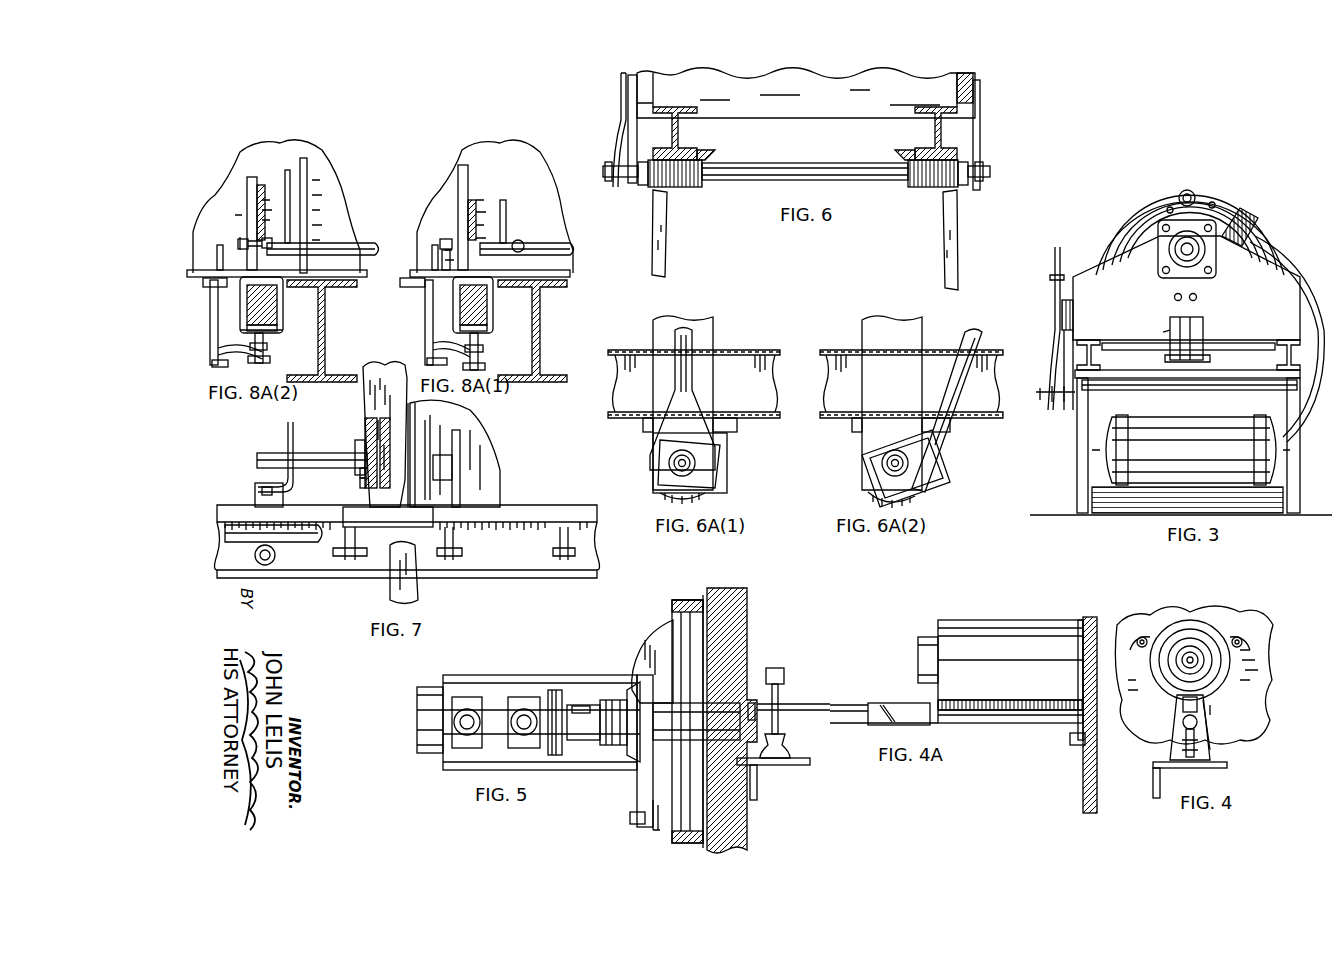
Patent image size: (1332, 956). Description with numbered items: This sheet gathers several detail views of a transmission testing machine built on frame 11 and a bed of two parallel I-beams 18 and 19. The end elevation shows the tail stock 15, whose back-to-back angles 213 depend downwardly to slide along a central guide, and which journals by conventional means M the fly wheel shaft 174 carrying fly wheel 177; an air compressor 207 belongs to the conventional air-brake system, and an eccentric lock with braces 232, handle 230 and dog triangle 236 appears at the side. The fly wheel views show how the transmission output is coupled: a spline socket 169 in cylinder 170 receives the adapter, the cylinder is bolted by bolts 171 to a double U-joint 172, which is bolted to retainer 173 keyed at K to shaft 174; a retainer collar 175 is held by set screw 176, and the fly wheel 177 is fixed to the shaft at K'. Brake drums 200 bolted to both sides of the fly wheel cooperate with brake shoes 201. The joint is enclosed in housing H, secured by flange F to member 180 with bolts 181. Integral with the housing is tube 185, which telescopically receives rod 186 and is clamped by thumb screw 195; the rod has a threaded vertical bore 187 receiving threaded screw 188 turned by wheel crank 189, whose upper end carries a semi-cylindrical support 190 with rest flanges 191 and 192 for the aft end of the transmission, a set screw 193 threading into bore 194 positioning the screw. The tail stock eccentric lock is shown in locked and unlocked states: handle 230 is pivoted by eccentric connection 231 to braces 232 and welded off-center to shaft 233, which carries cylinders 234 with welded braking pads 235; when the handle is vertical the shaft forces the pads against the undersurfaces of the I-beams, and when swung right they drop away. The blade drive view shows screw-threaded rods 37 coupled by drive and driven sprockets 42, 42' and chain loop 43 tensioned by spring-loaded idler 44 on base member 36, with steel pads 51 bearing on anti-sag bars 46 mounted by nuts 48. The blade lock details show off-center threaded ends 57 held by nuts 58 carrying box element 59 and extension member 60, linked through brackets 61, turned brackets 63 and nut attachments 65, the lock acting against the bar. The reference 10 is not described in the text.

In FIG. 3, the base 10 is at (1082, 456).
In FIG. 3, the frame 11 is at (1077, 430).
In FIG. 3, the tail stock 15 is at (1148, 343).
In FIG. 6, the I-beam 18 is at (679, 131).
In FIG. 6A1, the I-beam 18 is at (775, 350).
In FIG. 6A-2, the I-beam 18 is at (985, 350).
In FIG. 6, the I-beam 19 is at (932, 128).
In FIG. 3, the I-beam 19 is at (1287, 357).
In FIG. 7, the base member 36 is at (395, 380).
In FIG. 7, the screw-threaded rod 37 is at (300, 453).
In FIG. 7, the drive sprocket 42 is at (343, 477).
In FIG. 7, the driven sprocket 42' is at (350, 454).
In FIG. 7, the connecting chain loop 43 is at (364, 484).
In FIG. 7, the spring-loaded idler 44 is at (366, 425).
In FIG. 7, the anti-sag bar 46 is at (520, 512).
In FIG. 3, the bar mounting nut 48 is at (1091, 354).
In FIG. 7, the steel pad 51 is at (508, 490).
The off-center threaded end 57 is at (238, 244).
The nut 58 is at (248, 243).
The open box element 59 is at (283, 328).
The extension member 60 is at (243, 231).
The bracket 61 is at (218, 258).
The turned bracket 63 is at (230, 360).
The nut attachment 65 is at (252, 344).
In FIG. 5, the spline socket 169 is at (418, 722).
In FIG. 4, the spline socket 169 is at (1200, 655).
In FIG. 5, the cylinder 170 is at (430, 680).
In FIG. 4, the cylinder 170 is at (1200, 628).
In FIG. 5, the bolt 171 is at (458, 690).
In FIG. 5, the double U-joint 172 is at (500, 690).
In FIG. 5, the retainer 173 is at (552, 690).
In FIG. 5, the fly wheel shaft 174 is at (572, 705).
In FIG. 5, the retainer collar 175 is at (612, 700).
In FIG. 5, the set screw 176 is at (616, 740).
In FIG. 3, the fly wheel 177 is at (1266, 200).
In FIG. 5, the fly wheel 177 is at (735, 625).
In FIG. 5, the member 180 is at (657, 830).
In FIG. 5, the bolt 181 is at (630, 818).
In FIG. 4A, the tube 185 is at (995, 725).
In FIG. 4A, the rod 186 is at (836, 700).
In FIG. 5, the vertical bore 187 is at (790, 704).
In FIG. 5, the threaded screw 188 is at (778, 725).
In FIG. 5, the wheel crank 189 is at (795, 765).
In FIG. 5, the semi-cylindrical support 190 is at (784, 670).
In FIG. 4, the semi-cylindrical support 190 is at (1178, 685).
In FIG. 4, the rest flange 191 is at (1182, 700).
In FIG. 4, the rest flange 192 is at (1230, 675).
In FIG. 5, the set screw 193 is at (765, 725).
In FIG. 5, the bore 194 is at (752, 703).
In FIG. 4A, the thumb screw 195 is at (870, 725).
In FIG. 5, the brake drum 200 is at (688, 600).
In FIG. 5, the brake shoe 201 is at (672, 630).
In FIG. 3, the air compressor 207 is at (1208, 432).
In FIG. 3, the back-to-back angles 213 is at (1203, 325).
In FIG. 6, the locking bar handle 230 is at (620, 100).
In FIG. 3, the locking bar handle 230 is at (1055, 300).
In FIG. 6A1, the locking bar handle 230 is at (692, 365).
In FIG. 6A-2, the locking bar handle 230 is at (975, 330).
In FIG. 6, the eccentric connection 231 is at (583, 201).
In FIG. 6A1, the eccentric connection 231 is at (665, 478).
In FIG. 6A-2, the eccentric connection 231 is at (875, 463).
In FIG. 6, the brace 232 is at (633, 148).
In FIG. 3, the brace 232 is at (1062, 352).
In FIG. 6A1, the brace 232 is at (702, 333).
In FIG. 6A-2, the brace 232 is at (905, 340).
In FIG. 6, the shaft 233 is at (740, 178).
In FIG. 3, the shaft 233 is at (1155, 390).
In FIG. 6A1, the shaft 233 is at (727, 448).
In FIG. 6A-2, the shaft 233 is at (920, 492).
In FIG. 6, the cylinder 234 is at (685, 186).
In FIG. 6A1, the cylinder 234 is at (706, 496).
In FIG. 6A-2, the cylinder 234 is at (875, 498).
In FIG. 6, the braking pad 235 is at (705, 153).
In FIG. 6A1, the braking pad 235 is at (645, 428).
In FIG. 6A-2, the braking pad 235 is at (950, 428).
In FIG. 3, the dog triangle 236 is at (1048, 277).
In FIG. 3, the conventional journalling means M is at (1158, 255).
In FIG. 5, the housing H is at (556, 770).
In FIG. 4A, the housing H is at (1005, 620).
In FIG. 5, the key K is at (584, 680).
In FIG. 5, the fixed connection K' is at (696, 702).
In FIG. 5, the flange F is at (638, 780).